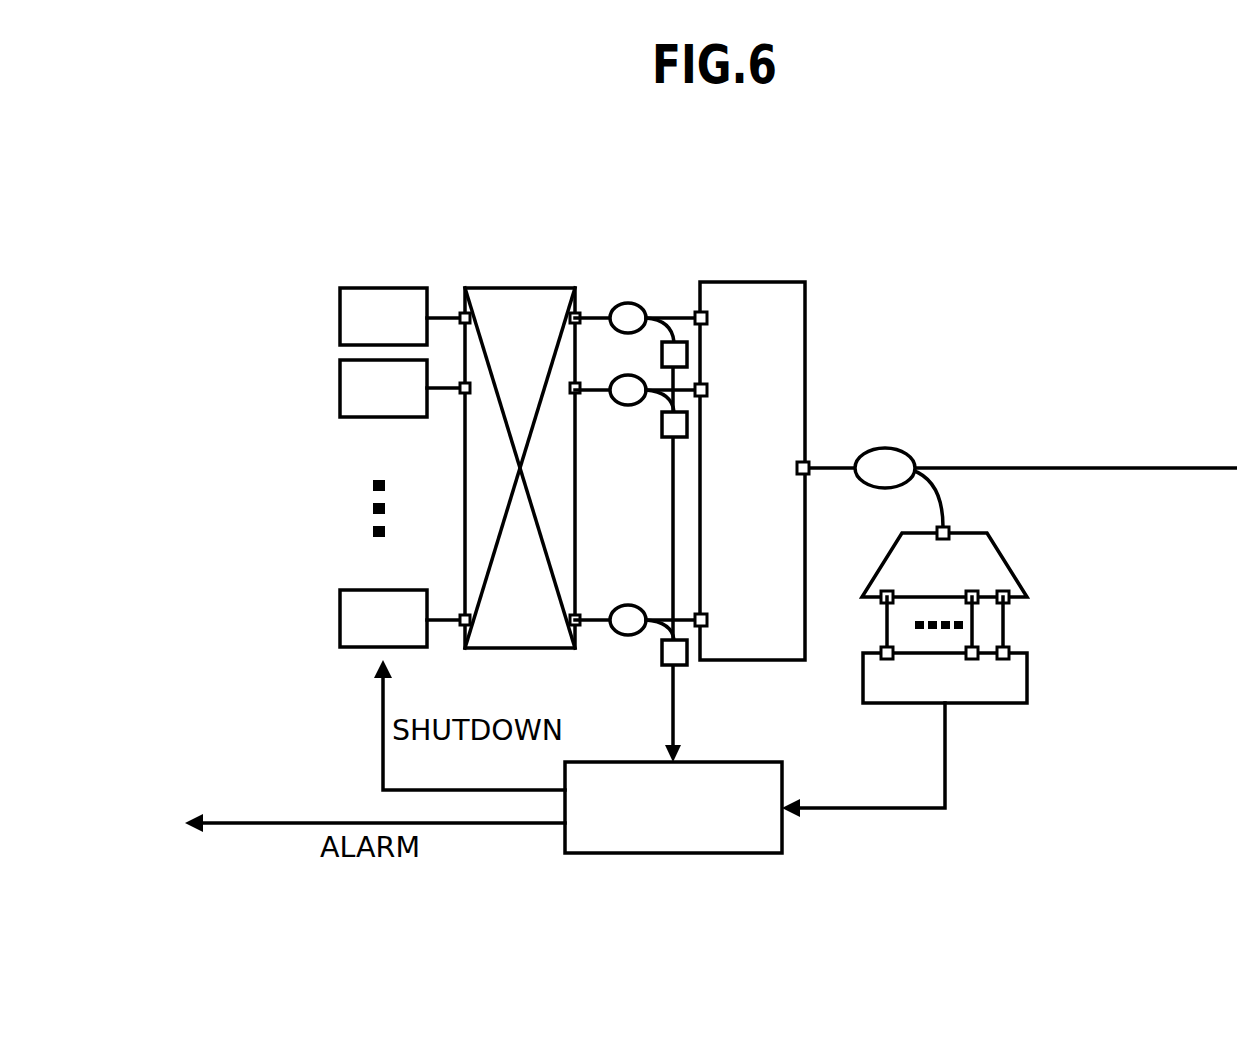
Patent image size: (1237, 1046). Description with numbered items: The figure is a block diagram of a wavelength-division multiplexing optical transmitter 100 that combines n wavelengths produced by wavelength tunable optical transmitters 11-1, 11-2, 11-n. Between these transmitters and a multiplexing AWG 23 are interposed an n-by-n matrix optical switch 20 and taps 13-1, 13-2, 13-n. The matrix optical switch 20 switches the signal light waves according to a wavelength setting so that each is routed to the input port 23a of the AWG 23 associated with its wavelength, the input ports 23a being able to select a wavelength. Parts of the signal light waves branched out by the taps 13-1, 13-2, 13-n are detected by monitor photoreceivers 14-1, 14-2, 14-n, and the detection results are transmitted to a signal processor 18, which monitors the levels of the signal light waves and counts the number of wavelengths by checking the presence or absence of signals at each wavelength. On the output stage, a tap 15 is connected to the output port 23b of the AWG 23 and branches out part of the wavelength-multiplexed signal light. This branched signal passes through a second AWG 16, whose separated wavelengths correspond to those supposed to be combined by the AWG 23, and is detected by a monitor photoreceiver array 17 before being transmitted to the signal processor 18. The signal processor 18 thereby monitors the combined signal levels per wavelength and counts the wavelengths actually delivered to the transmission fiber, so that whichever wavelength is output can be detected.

The wavelength-division multiplexing optical transmitter 100 is at (1112, 304).
The wavelength tunable optical transmitter 11-1 is at (340, 306).
The wavelength tunable optical transmitter 11-2 is at (340, 396).
The wavelength tunable optical transmitter 11-n is at (340, 614).
The n×n matrix optical switch 20 is at (514, 287).
The tap 13-1 is at (627, 303).
The tap 13-2 is at (623, 406).
The tap 13-n is at (645, 573).
The monitor photoreceiver 14-1 is at (680, 342).
The monitor photoreceiver 14-2 is at (670, 437).
The monitor photoreceiver 14-n is at (662, 653).
The AWG 23 is at (805, 357).
The input port 23a is at (710, 317).
The output port 23b is at (806, 460).
The tap 15 is at (898, 447).
The AWG 16 is at (997, 542).
The monitor photoreceiver array 17 is at (1028, 682).
The signal processor 18 is at (782, 832).